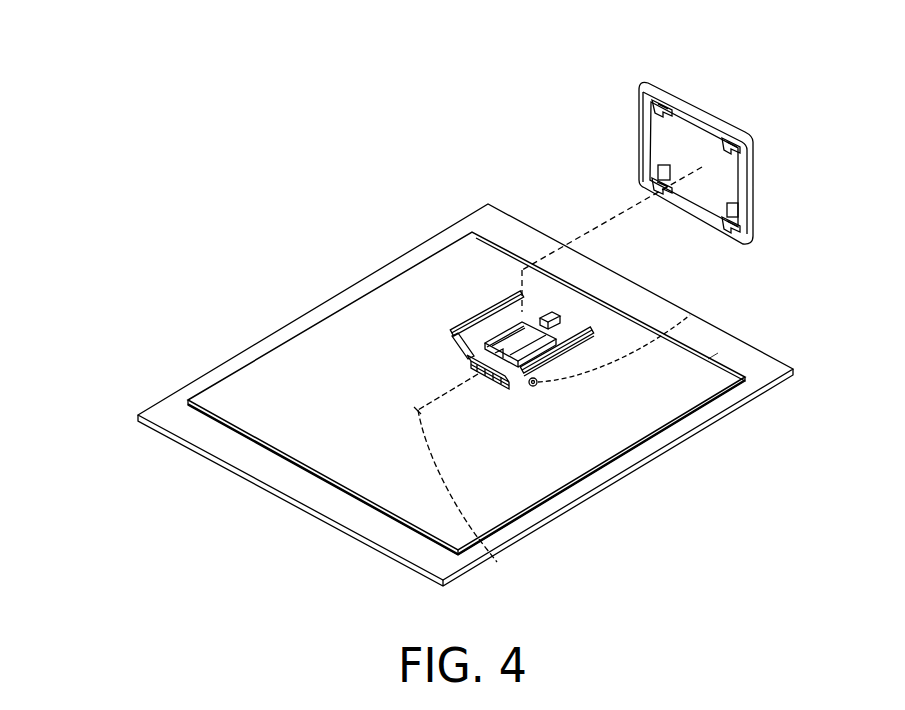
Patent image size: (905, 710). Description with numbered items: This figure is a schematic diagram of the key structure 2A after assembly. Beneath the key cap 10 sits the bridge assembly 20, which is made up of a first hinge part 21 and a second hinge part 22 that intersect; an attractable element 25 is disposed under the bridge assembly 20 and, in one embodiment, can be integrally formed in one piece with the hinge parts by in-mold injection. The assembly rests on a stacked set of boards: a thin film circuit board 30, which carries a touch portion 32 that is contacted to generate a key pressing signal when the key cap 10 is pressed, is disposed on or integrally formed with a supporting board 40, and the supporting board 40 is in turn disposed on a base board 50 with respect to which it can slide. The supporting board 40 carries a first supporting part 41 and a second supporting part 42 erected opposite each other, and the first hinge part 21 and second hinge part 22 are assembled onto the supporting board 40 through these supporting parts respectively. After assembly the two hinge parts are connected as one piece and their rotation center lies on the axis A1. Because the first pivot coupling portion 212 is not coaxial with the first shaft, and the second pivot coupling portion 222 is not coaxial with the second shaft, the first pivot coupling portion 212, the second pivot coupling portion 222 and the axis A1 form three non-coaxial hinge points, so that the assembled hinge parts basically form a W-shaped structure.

The key structure 2A is at (93, 79).
The key cap 10 is at (757, 188).
The bridge assembly 20 is at (481, 356).
The first hinge part 21 is at (497, 307).
The second hinge part 22 is at (555, 316).
The attractable element 25 is at (505, 314).
The thin film circuit board 30 is at (686, 350).
The touch portion 32 is at (683, 355).
The supporting board 40 is at (713, 356).
The first supporting part 41 is at (453, 338).
The second supporting part 42 is at (573, 327).
The base board 50 is at (773, 368).
The first pivot coupling portion 212 is at (470, 368).
The second pivot coupling portion 222 is at (484, 372).
The axis A1 is at (476, 483).